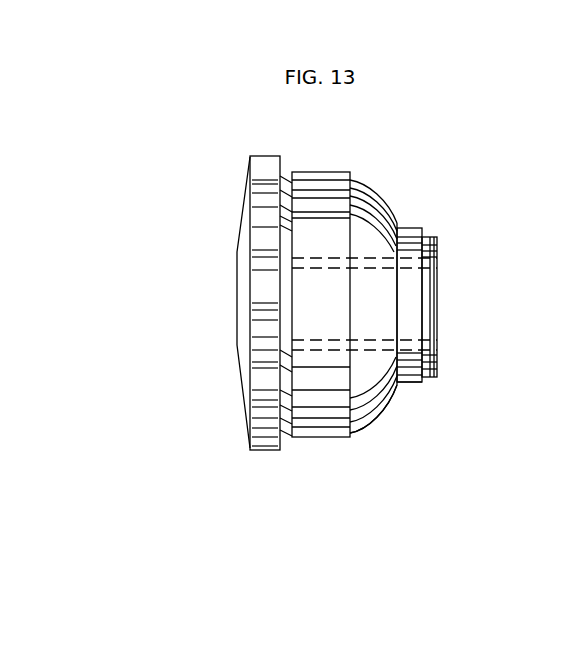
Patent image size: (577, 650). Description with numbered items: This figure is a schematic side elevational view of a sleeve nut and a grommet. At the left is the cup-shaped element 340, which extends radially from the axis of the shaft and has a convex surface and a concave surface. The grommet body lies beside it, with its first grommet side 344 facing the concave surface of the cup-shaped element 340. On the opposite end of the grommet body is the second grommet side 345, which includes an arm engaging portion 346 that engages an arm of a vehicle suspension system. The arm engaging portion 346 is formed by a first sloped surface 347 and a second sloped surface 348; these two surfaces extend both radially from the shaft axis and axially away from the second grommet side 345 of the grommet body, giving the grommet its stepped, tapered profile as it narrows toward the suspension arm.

The cup-shaped element 340 is at (290, 217).
The first grommet side 344 is at (279, 402).
The second grommet side 345 is at (436, 315).
The arm engaging portion 346 is at (420, 410).
The first sloped surface 347 is at (400, 216).
The second sloped surface 348 is at (350, 166).